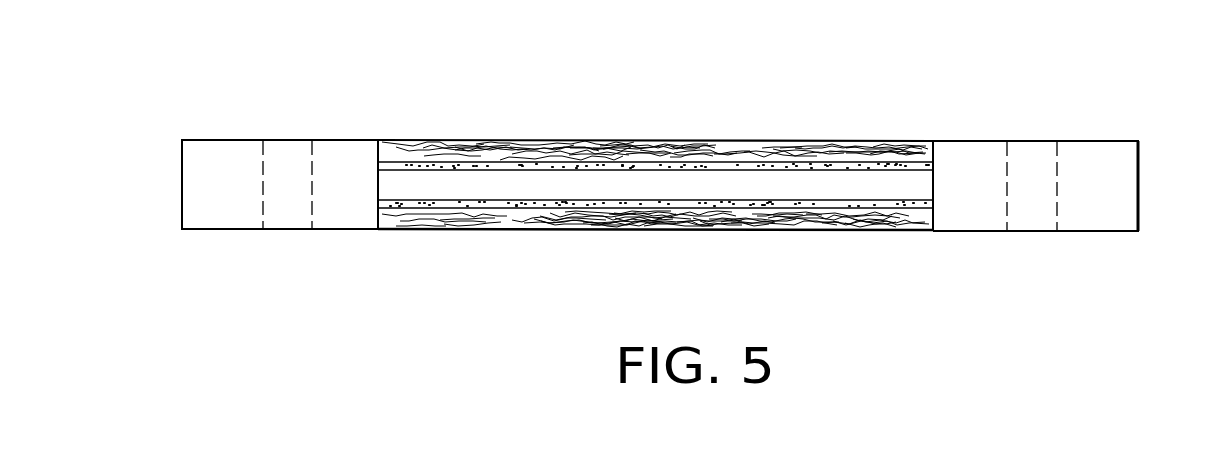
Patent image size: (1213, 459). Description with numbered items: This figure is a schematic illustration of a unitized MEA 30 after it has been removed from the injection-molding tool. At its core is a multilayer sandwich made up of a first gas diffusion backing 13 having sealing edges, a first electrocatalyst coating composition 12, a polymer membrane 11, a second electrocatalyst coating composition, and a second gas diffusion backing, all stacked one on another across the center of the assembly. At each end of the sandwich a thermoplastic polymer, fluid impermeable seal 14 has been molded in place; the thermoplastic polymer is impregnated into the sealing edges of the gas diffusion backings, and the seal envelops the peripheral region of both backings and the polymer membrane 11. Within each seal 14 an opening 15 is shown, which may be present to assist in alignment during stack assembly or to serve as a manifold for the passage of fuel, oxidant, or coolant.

The unitized MEA 30 is at (704, 249).
The polymer membrane 11 is at (780, 185).
The first electrocatalyst coating composition 12 is at (627, 203).
The first gas diffusion backing 13 is at (488, 220).
The thermoplastic polymer fluid impermeable seal 14 is at (204, 146).
The opening 15 is at (287, 168).